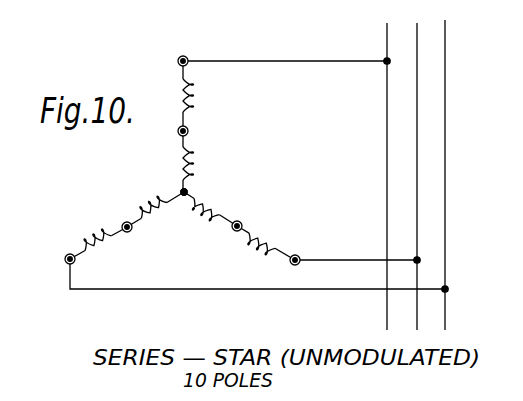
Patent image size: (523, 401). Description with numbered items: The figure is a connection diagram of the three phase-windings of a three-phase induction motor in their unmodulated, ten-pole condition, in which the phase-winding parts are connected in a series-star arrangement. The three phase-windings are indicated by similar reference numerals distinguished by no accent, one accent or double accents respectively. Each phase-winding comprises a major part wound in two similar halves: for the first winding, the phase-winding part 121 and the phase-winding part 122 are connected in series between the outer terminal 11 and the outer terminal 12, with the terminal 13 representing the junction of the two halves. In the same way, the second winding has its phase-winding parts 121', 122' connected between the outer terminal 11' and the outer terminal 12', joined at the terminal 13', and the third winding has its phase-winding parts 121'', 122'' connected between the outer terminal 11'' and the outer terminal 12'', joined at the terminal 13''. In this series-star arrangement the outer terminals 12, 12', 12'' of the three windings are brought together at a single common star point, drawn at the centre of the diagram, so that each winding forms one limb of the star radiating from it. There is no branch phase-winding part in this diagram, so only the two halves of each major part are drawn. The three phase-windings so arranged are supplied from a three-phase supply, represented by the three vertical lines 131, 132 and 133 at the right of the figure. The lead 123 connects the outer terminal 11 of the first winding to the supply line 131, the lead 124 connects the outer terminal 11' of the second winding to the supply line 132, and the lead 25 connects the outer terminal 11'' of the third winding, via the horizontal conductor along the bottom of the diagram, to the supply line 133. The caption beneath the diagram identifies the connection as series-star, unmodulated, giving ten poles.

The outer terminal 11 is at (189, 41).
The phase-winding part 121 is at (207, 95).
The terminal 13 is at (204, 129).
The phase-winding part 122 is at (207, 163).
The outer terminal 12 is at (207, 183).
The outer terminal 12' is at (224, 183).
The outer terminal 12'' is at (239, 183).
The phase-winding part 122'' is at (142, 199).
The terminal 13'' is at (110, 214).
The phase-winding part 121'' is at (74, 238).
The outer terminal 11'' is at (50, 264).
The phase-winding part 122' is at (184, 223).
The terminal 13' is at (258, 215).
The phase-winding part 121' is at (230, 253).
The outer terminal 11' is at (309, 242).
The lead 123 is at (310, 53).
The lead 124 is at (352, 259).
The connection to supply line 25 is at (255, 290).
The three-phase supply 131 is at (387, 195).
The three-phase supply 132 is at (417, 195).
The three-phase supply 133 is at (445, 195).